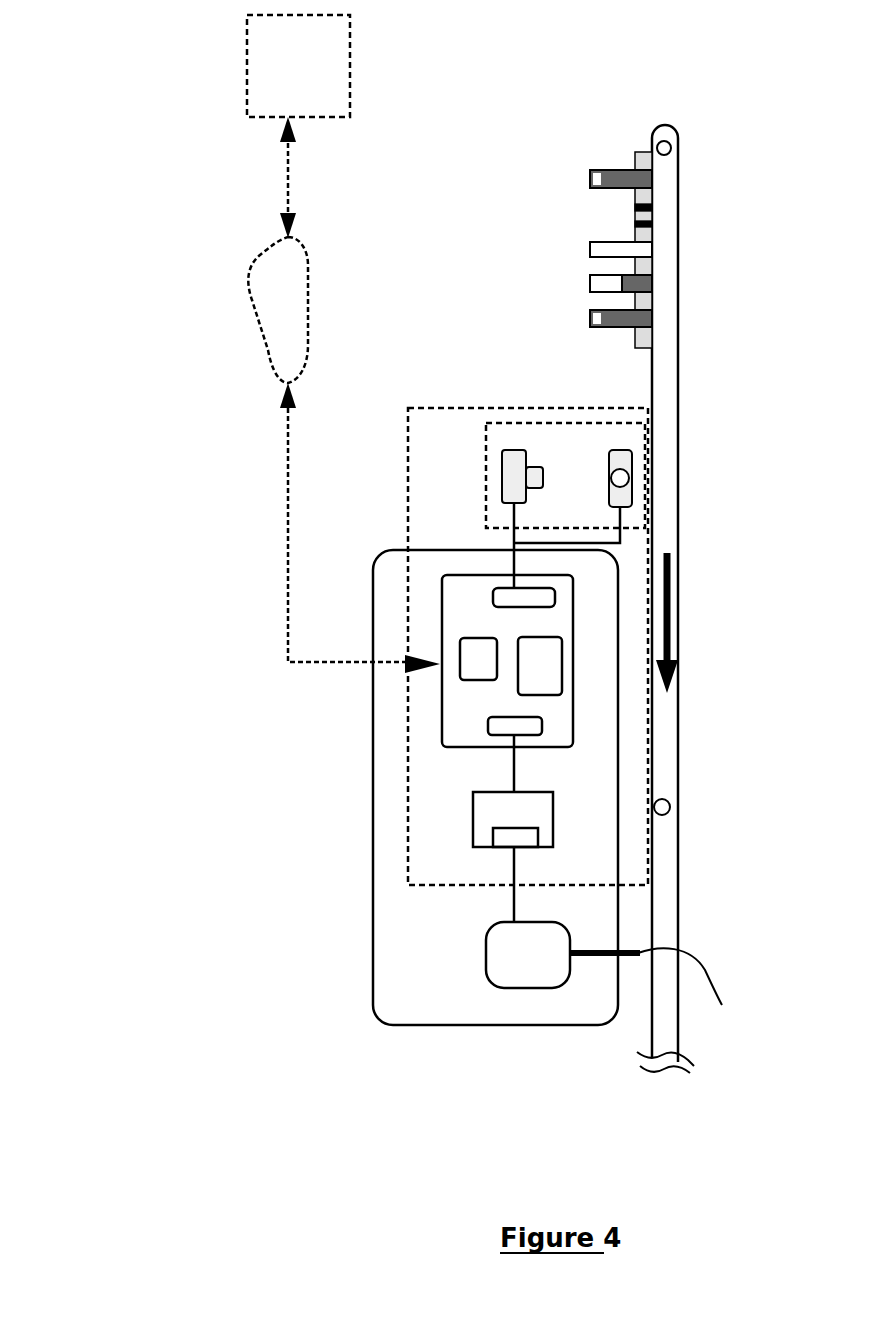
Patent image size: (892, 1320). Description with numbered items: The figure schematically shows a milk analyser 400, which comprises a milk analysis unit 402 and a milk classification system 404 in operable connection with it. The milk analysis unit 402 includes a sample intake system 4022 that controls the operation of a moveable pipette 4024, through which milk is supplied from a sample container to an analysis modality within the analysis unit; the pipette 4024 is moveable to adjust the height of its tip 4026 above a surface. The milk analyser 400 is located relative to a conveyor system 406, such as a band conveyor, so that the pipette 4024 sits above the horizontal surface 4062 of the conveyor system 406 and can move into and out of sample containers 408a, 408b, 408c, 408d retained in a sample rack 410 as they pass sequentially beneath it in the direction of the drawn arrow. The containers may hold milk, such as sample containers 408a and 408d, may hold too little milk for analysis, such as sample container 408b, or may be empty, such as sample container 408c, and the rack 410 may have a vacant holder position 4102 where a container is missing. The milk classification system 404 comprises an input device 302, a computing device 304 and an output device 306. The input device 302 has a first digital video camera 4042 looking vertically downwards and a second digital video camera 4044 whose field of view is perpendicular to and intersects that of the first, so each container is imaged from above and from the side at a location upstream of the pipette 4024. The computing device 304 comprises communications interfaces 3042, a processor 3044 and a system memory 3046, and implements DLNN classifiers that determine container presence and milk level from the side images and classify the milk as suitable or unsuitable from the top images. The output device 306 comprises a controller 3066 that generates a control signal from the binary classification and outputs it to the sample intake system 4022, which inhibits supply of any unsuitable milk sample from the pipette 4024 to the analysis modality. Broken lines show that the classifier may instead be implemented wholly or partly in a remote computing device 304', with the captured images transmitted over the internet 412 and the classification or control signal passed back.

The milk analyser 400 is at (138, 834).
The milk analysis unit 402 is at (373, 1012).
The milk classification system 404 is at (415, 408).
The input device 302 is at (518, 423).
The computing device 304 is at (452, 636).
The remote computing device 304' is at (339, 66).
The output device 306 is at (553, 812).
The communications interface 3042 is at (545, 607).
The processor 3044 is at (562, 668).
The system memory 3046 is at (460, 672).
The controller 3066 is at (505, 828).
The sample intake system 4022 is at (488, 978).
The moveable pipette 4024 is at (588, 962).
The tip 4026 is at (697, 991).
The conveyor system 406 is at (663, 130).
The horizontal surface 4062 is at (645, 1040).
The sample container 408a is at (652, 313).
The sample container 408b is at (652, 280).
The sample container 408c is at (652, 245).
The sample container 408d is at (655, 172).
The sample rack 410 is at (635, 152).
The vacant holder position 4102 is at (635, 212).
The first digital video camera 4042 is at (502, 468).
The second digital video camera 4044 is at (632, 462).
The internet 412 is at (247, 290).